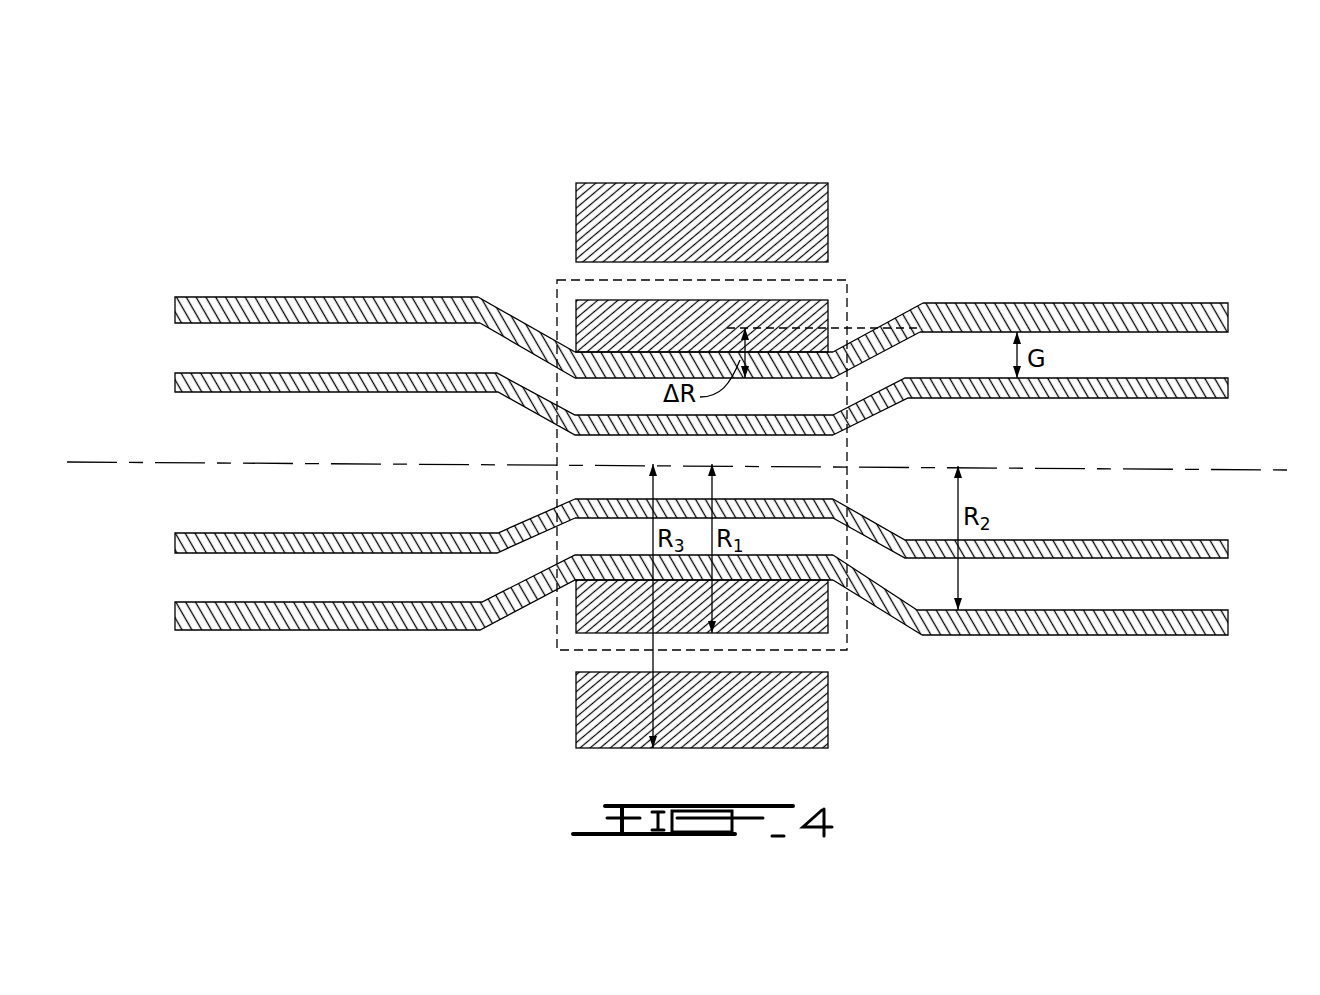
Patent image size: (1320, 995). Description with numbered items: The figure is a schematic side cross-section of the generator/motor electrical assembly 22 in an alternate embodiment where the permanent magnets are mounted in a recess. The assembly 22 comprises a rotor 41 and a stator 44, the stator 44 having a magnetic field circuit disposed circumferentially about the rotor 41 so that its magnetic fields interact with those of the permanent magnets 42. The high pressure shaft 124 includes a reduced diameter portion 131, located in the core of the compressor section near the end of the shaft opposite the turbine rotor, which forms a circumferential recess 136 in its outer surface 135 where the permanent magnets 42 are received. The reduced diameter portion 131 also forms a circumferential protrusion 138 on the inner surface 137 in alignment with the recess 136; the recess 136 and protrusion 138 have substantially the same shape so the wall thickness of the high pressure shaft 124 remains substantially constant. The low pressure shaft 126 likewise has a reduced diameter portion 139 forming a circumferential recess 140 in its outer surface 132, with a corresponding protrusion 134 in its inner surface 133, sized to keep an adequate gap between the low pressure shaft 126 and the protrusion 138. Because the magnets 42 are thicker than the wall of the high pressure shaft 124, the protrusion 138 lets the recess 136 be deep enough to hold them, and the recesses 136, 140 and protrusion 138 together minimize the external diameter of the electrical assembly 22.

The generator/motor electrical assembly 22 is at (740, 391).
The stator 44 is at (608, 196).
The permanent magnets 42 is at (773, 328).
The rotor 41 is at (848, 280).
The reduced diameter portion 131 is at (862, 330).
The high pressure shaft 124 is at (1073, 313).
The low pressure shaft 126 is at (1182, 383).
The outer surface 135 is at (327, 296).
The circumferential recess 136 is at (540, 333).
The inner surface 137 is at (218, 325).
The circumferential protrusion 138 is at (608, 378).
The protrusion 134 is at (803, 494).
The inner surface 133 is at (1147, 538).
The outer surface 132 is at (1083, 560).
The reduced diameter portion 139 is at (880, 543).
The circumferential recess 140 is at (535, 536).